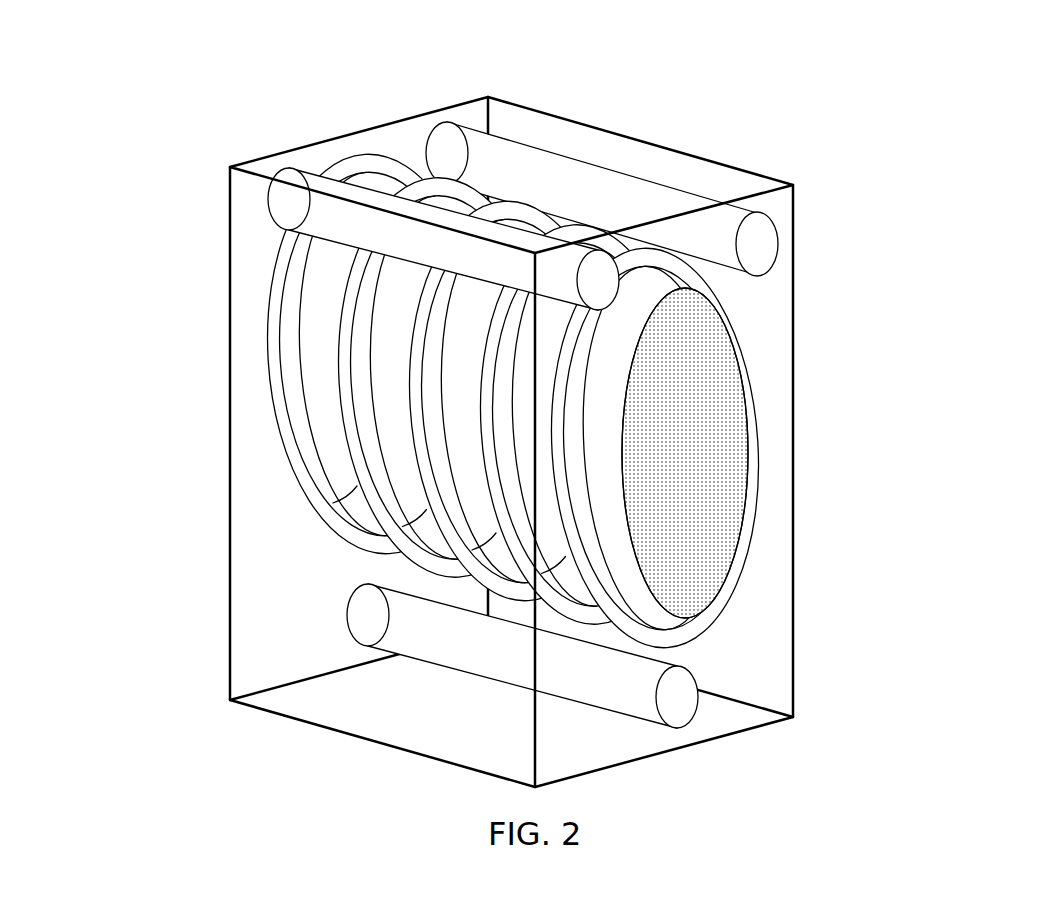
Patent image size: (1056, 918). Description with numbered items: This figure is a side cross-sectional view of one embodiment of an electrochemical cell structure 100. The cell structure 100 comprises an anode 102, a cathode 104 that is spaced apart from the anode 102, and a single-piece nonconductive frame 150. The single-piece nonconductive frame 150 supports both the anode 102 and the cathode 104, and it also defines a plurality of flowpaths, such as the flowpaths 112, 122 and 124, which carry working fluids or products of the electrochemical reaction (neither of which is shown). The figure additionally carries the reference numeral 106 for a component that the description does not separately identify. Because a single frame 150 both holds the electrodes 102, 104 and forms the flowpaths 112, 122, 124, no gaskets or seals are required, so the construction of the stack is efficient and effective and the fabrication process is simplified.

The electrochemical cell structure 100 is at (932, 91).
The anode 102 is at (268, 335).
The cathode 104 is at (323, 503).
The coil winding 106 is at (318, 373).
The flowpath 112 is at (620, 693).
The flowpath 122 is at (322, 185).
The flowpath 124 is at (492, 160).
The single-piece nonconductive frame 150 is at (675, 163).